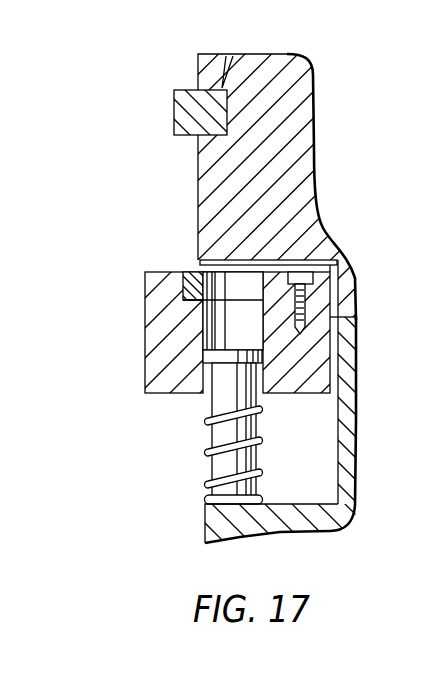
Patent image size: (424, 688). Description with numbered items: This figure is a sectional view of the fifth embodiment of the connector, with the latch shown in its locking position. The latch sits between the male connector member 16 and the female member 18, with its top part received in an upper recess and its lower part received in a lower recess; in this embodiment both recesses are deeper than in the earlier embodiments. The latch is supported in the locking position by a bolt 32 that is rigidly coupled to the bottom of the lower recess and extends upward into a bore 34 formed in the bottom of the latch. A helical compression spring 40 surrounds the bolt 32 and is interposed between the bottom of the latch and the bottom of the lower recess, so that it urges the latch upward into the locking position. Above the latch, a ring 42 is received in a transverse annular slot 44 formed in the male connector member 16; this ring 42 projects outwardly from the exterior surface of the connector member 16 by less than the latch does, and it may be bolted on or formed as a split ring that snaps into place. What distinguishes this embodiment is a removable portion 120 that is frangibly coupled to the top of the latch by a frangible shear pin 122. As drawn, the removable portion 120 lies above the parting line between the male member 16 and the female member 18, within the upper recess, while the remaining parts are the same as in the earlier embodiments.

The male connector member 16 is at (307, 70).
The female member 18 is at (359, 379).
The bolt 32 is at (207, 455).
The bore 34 is at (212, 381).
The helical compression spring 40 is at (210, 458).
The ring 42 is at (172, 108).
The transverse annular slot 44 is at (235, 62).
The removable portion 120 is at (336, 262).
The frangible shear pin 122 is at (314, 307).